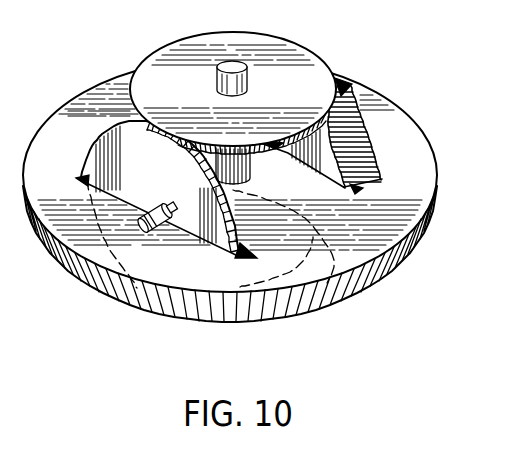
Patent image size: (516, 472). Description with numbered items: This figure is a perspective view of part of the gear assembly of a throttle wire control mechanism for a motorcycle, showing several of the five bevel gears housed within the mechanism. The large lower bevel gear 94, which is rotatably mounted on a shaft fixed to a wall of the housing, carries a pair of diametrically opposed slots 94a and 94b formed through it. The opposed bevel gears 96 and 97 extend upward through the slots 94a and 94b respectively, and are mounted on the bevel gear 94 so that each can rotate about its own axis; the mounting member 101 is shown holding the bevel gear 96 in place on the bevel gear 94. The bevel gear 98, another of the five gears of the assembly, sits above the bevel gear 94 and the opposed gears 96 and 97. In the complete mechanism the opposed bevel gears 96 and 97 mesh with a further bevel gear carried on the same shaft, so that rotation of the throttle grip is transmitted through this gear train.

The bevel gear 94 is at (410, 156).
The slot 94a is at (215, 252).
The slot 94b is at (366, 189).
The bevel gear 96 is at (113, 158).
The bevel gear 97 is at (360, 98).
The bevel gear 98 is at (184, 58).
The mounting member 101 is at (153, 205).